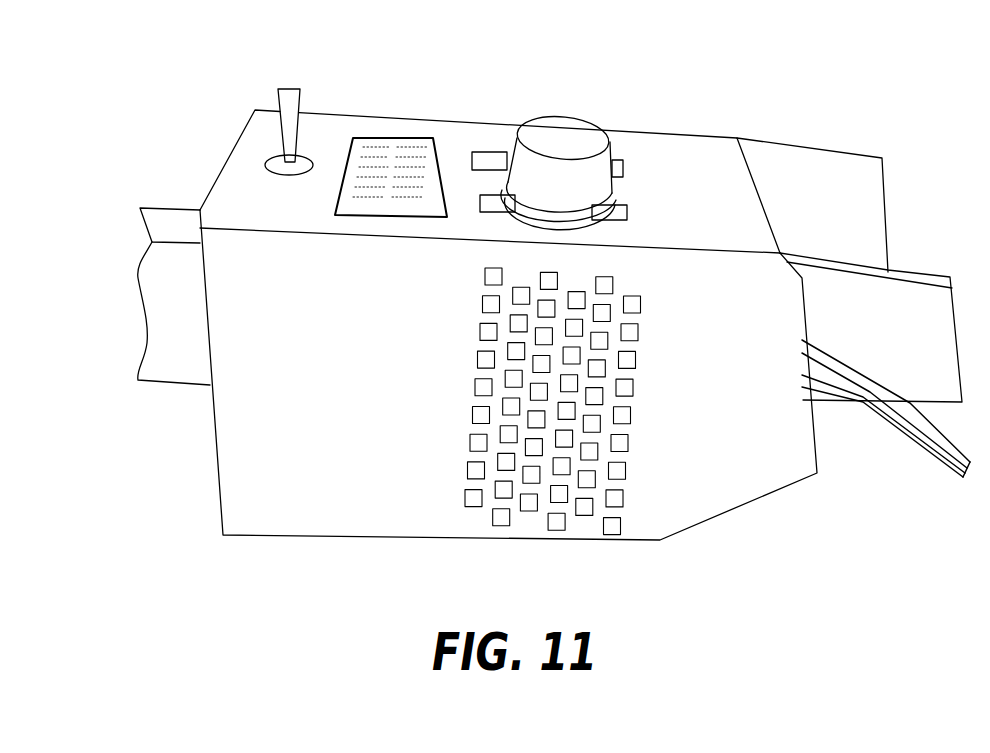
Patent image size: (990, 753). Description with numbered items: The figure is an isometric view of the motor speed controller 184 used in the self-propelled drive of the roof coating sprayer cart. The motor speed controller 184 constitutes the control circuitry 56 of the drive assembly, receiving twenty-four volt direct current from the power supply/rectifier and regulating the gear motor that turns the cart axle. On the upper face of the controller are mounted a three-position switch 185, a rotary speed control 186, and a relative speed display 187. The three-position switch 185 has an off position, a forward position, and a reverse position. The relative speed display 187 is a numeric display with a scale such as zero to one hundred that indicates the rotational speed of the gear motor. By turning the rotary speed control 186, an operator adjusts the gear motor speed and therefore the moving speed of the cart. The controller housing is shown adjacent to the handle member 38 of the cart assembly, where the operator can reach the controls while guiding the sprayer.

The motor speed controller 184 is at (648, 168).
The control circuitry 56 is at (700, 177).
The three-position switch 185 is at (288, 93).
The rotary speed control 186 is at (542, 132).
The relative speed display 187 is at (420, 142).
The handle member 38 is at (885, 307).